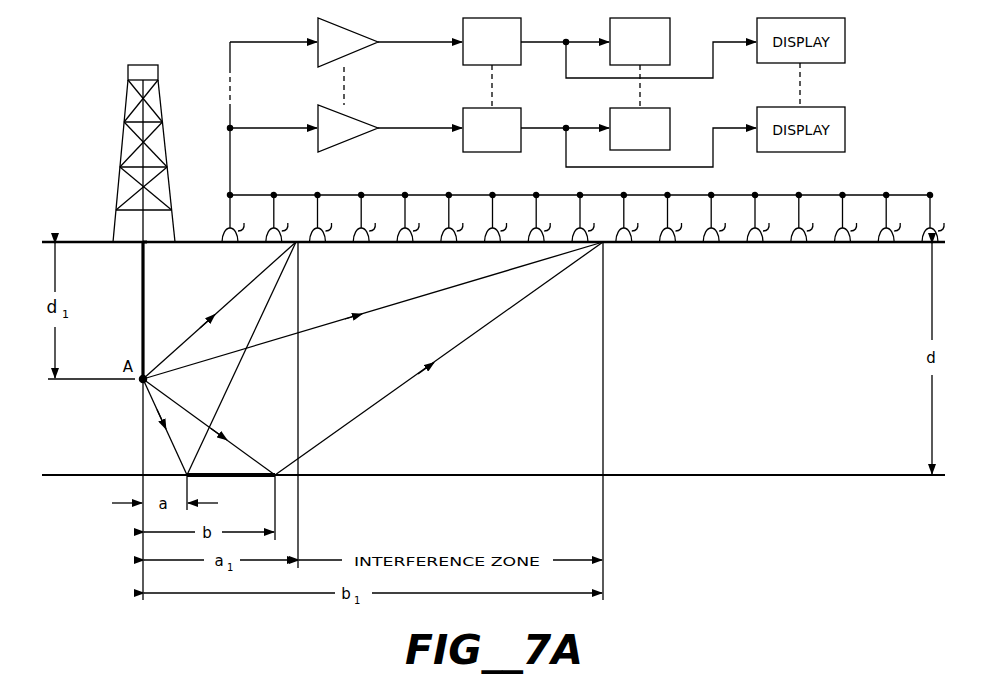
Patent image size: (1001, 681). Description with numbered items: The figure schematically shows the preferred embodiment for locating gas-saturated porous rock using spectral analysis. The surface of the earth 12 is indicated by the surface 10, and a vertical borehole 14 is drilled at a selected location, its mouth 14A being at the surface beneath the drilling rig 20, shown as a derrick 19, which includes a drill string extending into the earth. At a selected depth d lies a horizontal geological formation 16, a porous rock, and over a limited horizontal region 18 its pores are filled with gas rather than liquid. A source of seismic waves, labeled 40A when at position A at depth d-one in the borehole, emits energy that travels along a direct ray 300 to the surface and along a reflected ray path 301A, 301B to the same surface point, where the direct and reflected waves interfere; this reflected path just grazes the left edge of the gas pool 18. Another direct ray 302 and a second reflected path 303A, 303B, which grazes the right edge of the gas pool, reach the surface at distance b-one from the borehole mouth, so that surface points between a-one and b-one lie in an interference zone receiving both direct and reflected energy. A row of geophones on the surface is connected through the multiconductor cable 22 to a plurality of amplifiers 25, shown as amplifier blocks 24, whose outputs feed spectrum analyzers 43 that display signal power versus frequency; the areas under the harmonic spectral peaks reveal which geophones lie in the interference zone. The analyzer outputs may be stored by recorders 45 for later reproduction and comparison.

The surface of the earth 10 is at (81, 239).
The earth 12 is at (748, 352).
The vertical borehole 14 is at (141, 272).
The mouth of the borehole 14A is at (149, 250).
The horizontal geological formation 16 is at (741, 477).
The gas-filled porous rock 18 is at (238, 478).
The derrick 19 is at (127, 104).
The drilling rig 20 is at (888, 184).
The multiconductor cable 22 is at (228, 164).
The amplifier 24 is at (317, 110).
The amplifiers 25 is at (417, 126).
The source of seismic waves at position A 40A is at (140, 383).
The spectrum analyzers 43 is at (523, 112).
The recorders 45 is at (672, 118).
The direct ray 300 is at (193, 337).
The reflected ray path (downgoing leg) 301A is at (158, 424).
The reflected ray path (upgoing leg) 301B is at (288, 287).
The direct seismic ray 302 is at (393, 308).
The ray path (downgoing leg) 303A is at (246, 456).
The ray path (upgoing leg) 303B is at (461, 342).